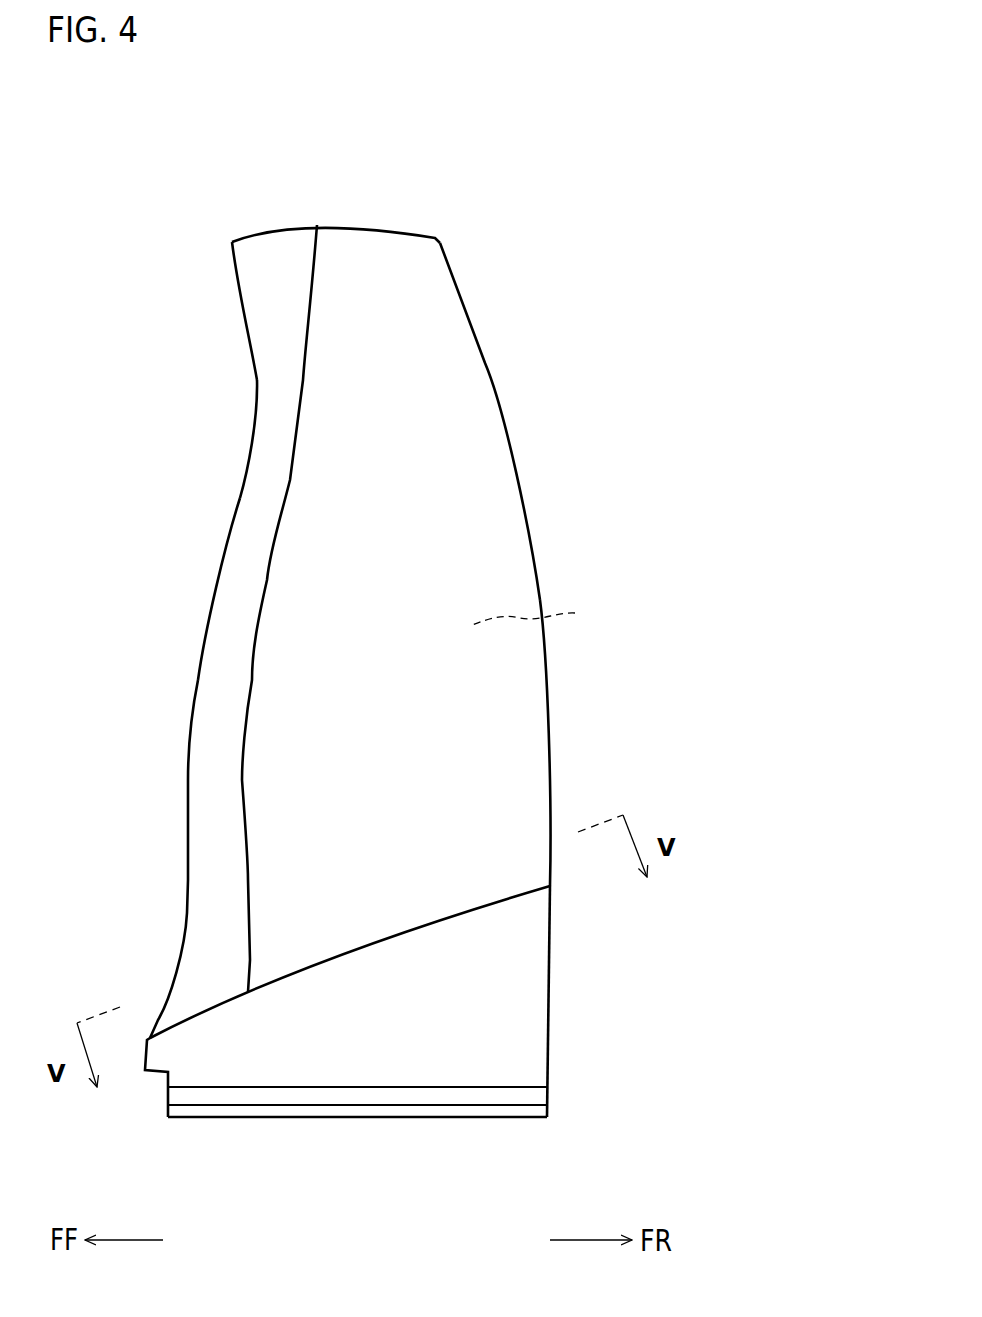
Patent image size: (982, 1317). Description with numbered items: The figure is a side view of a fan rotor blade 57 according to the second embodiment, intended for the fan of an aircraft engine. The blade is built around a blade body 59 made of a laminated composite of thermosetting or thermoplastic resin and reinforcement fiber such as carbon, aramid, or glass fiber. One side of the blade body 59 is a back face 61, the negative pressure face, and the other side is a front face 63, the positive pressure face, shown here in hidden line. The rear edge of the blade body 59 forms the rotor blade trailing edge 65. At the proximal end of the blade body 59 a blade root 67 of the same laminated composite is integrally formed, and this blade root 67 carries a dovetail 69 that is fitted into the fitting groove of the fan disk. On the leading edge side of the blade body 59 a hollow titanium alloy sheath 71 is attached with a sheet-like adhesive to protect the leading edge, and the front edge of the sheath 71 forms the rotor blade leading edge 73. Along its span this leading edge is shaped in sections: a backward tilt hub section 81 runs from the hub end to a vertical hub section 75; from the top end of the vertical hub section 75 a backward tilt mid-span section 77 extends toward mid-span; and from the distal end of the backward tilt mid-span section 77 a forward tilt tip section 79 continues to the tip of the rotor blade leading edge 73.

The fan rotor blade 57 is at (342, 163).
The sheath 71 is at (255, 232).
The forward tilt tip section 79 is at (240, 277).
The rotor blade leading edge 73 is at (247, 452).
The backward tilt mid-span section 77 is at (240, 498).
The vertical hub section 75 is at (188, 803).
The backward tilt hub section 81 is at (187, 927).
The blade body 59 is at (505, 400).
The back face 61 is at (467, 550).
The front face 63 is at (537, 615).
The rotor blade trailing edge 65 is at (550, 752).
The blade root 67 is at (552, 1020).
The dovetail 69 is at (347, 1098).